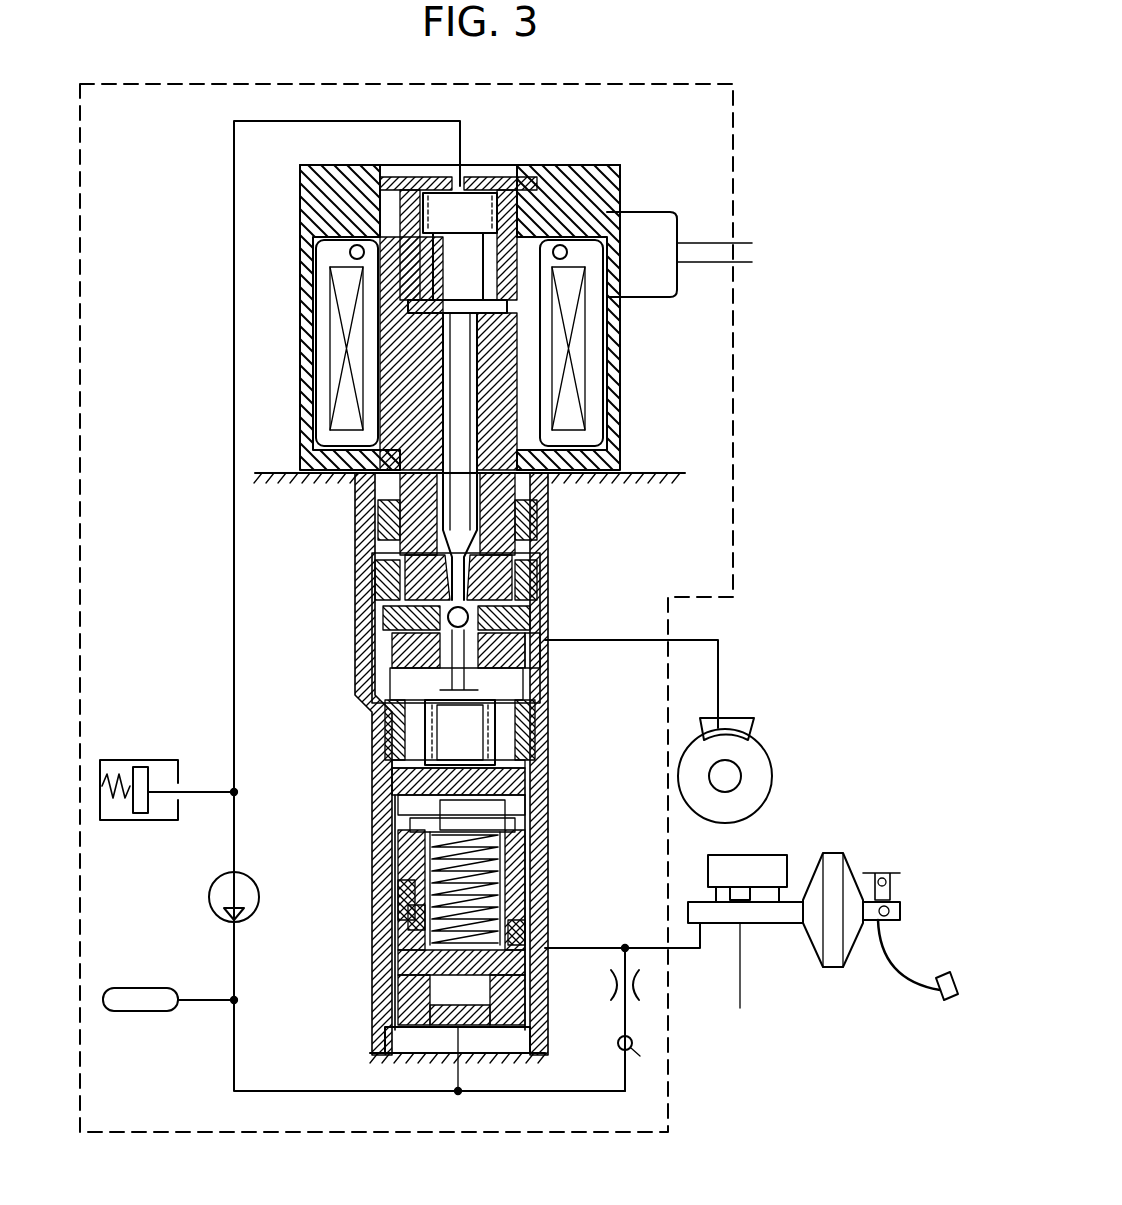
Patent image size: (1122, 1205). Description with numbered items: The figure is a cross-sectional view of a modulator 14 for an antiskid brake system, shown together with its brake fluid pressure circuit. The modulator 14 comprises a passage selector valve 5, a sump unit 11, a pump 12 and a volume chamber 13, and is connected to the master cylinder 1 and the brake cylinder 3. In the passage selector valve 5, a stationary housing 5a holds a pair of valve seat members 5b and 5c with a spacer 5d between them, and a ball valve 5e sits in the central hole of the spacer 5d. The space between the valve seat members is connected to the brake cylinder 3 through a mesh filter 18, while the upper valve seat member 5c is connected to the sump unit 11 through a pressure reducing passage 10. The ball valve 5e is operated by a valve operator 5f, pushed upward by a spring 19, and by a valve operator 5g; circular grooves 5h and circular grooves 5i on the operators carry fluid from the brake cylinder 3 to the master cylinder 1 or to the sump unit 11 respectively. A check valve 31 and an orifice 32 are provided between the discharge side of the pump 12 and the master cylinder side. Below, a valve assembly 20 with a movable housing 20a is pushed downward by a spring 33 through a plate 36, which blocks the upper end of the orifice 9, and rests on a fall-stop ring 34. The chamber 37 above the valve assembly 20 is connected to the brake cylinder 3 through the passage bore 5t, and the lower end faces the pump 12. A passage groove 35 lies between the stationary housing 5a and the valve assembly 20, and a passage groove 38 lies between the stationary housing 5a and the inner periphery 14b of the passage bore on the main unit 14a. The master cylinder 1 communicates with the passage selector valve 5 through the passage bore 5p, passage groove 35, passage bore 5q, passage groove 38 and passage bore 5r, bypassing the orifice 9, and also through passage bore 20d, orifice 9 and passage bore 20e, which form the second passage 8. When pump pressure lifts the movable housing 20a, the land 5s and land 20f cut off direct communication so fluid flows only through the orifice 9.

The master cylinder 1 is at (770, 930).
The brake cylinder 3 is at (735, 720).
The passage selector valve 5 is at (505, 612).
The stationary housing 5a is at (548, 556).
The valve seat member 5b is at (375, 676).
The valve seat member 5c is at (515, 548).
The spacer 5d is at (375, 595).
The ball valve 5e is at (540, 655).
The valve operator 5f is at (395, 648).
The valve operator 5g is at (538, 590).
The circular grooves 5h is at (460, 732).
The circular grooves 5i is at (470, 383).
The passage bore 5p is at (528, 958).
The passage bore 5q is at (395, 848).
The passage bore 5r is at (390, 760).
The land 5s is at (528, 926).
The passage bore 5t is at (528, 770).
The second passage 8 is at (457, 998).
The orifice 9 is at (400, 918).
The pressure reducing passage 10 is at (234, 428).
The sump unit 11 is at (133, 755).
The pump 12 is at (208, 895).
The volume chamber 13 is at (143, 1012).
The modulator 14 is at (343, 1133).
The main unit 14a is at (648, 470).
The inner periphery of passage bore 14b is at (540, 822).
The mesh filter 18 is at (390, 625).
The spring 19 is at (390, 712).
The valve assembly 20 is at (528, 895).
The movable housing 20a is at (395, 990).
The passage bore 20d is at (491, 998).
The passage bore 20e is at (528, 872).
The land 20f is at (395, 950).
The check valve 31 is at (633, 1047).
The orifice 32 is at (648, 986).
The spring 33 is at (392, 787).
The fall-stop ring 34 is at (392, 1015).
The passage groove 35 is at (398, 882).
The plate 36 is at (518, 837).
The chamber 37 is at (510, 808).
The passage groove 38 is at (392, 818).